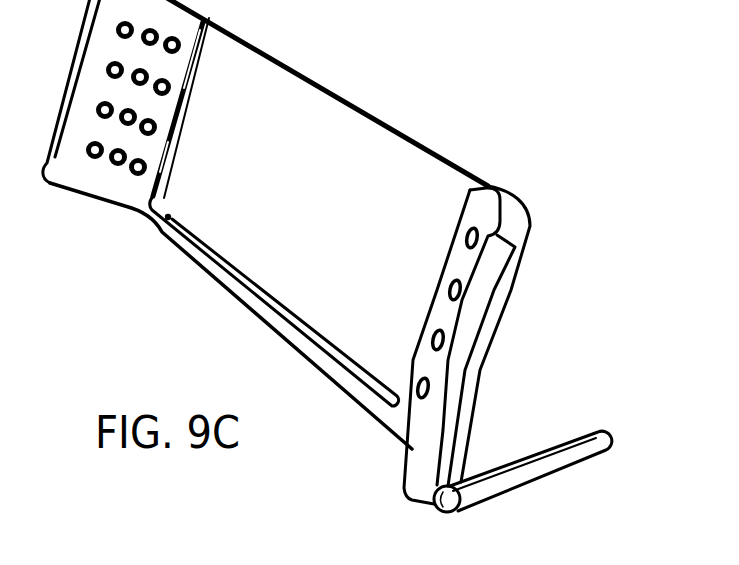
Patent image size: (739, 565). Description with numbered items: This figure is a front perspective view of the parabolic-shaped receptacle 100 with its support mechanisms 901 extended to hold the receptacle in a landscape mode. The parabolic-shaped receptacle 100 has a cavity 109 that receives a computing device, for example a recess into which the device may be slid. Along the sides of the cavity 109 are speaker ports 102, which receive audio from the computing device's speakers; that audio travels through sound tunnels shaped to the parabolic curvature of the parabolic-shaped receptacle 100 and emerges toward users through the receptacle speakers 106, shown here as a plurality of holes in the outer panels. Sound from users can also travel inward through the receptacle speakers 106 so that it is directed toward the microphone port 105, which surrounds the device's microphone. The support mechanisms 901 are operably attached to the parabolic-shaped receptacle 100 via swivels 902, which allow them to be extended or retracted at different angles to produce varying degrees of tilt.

The parabolic-shaped receptacle 100 is at (354, 256).
The speaker ports 102 is at (172, 172).
The microphone port 105 is at (170, 212).
The receptacle speakers 106 is at (97, 157).
The cavity 109 is at (346, 225).
The support mechanisms 901 is at (562, 444).
The swivels 902 is at (463, 474).